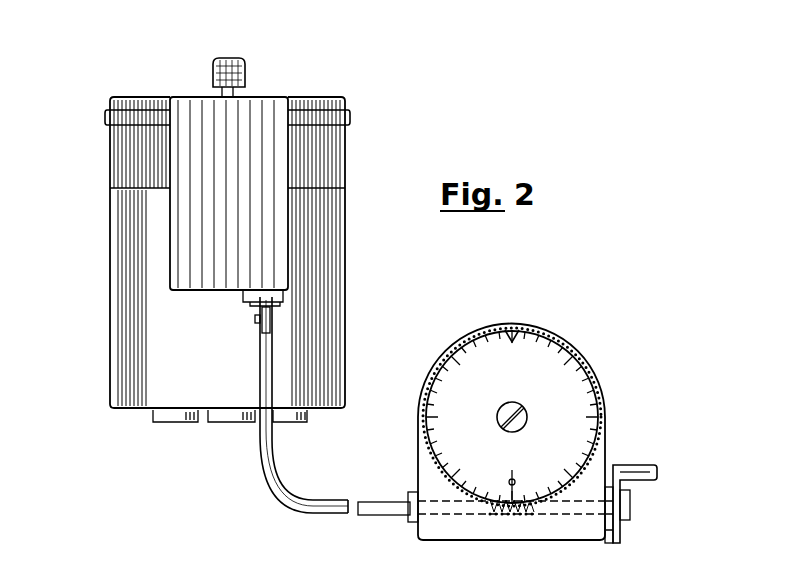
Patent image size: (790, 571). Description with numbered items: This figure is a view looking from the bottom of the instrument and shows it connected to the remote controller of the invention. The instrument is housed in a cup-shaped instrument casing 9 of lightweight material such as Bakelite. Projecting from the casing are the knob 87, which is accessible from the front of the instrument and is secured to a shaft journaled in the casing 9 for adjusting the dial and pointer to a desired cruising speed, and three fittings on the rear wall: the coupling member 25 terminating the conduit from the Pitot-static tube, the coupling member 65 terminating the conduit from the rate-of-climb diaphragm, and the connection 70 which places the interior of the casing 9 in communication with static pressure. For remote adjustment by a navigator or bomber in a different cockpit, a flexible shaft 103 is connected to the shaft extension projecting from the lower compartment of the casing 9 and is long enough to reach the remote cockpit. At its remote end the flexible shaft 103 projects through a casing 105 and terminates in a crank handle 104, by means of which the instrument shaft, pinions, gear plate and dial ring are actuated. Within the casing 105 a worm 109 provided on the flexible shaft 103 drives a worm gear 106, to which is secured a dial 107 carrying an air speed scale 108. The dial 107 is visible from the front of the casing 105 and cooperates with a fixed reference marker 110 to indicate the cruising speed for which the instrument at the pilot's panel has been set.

The instrument casing 9 is at (128, 333).
The knob 87 is at (247, 73).
The connection 70 is at (180, 431).
The coupling member 65 is at (228, 431).
The coupling member 25 is at (300, 427).
The flexible shaft 103 is at (309, 510).
The crank handle 104 is at (640, 470).
The casing 105 is at (603, 393).
The worm gear 106 is at (432, 455).
The dial 107 is at (538, 360).
The air speed scale 108 is at (590, 378).
The worm 109 is at (500, 512).
The fixed reference marker 110 is at (513, 334).